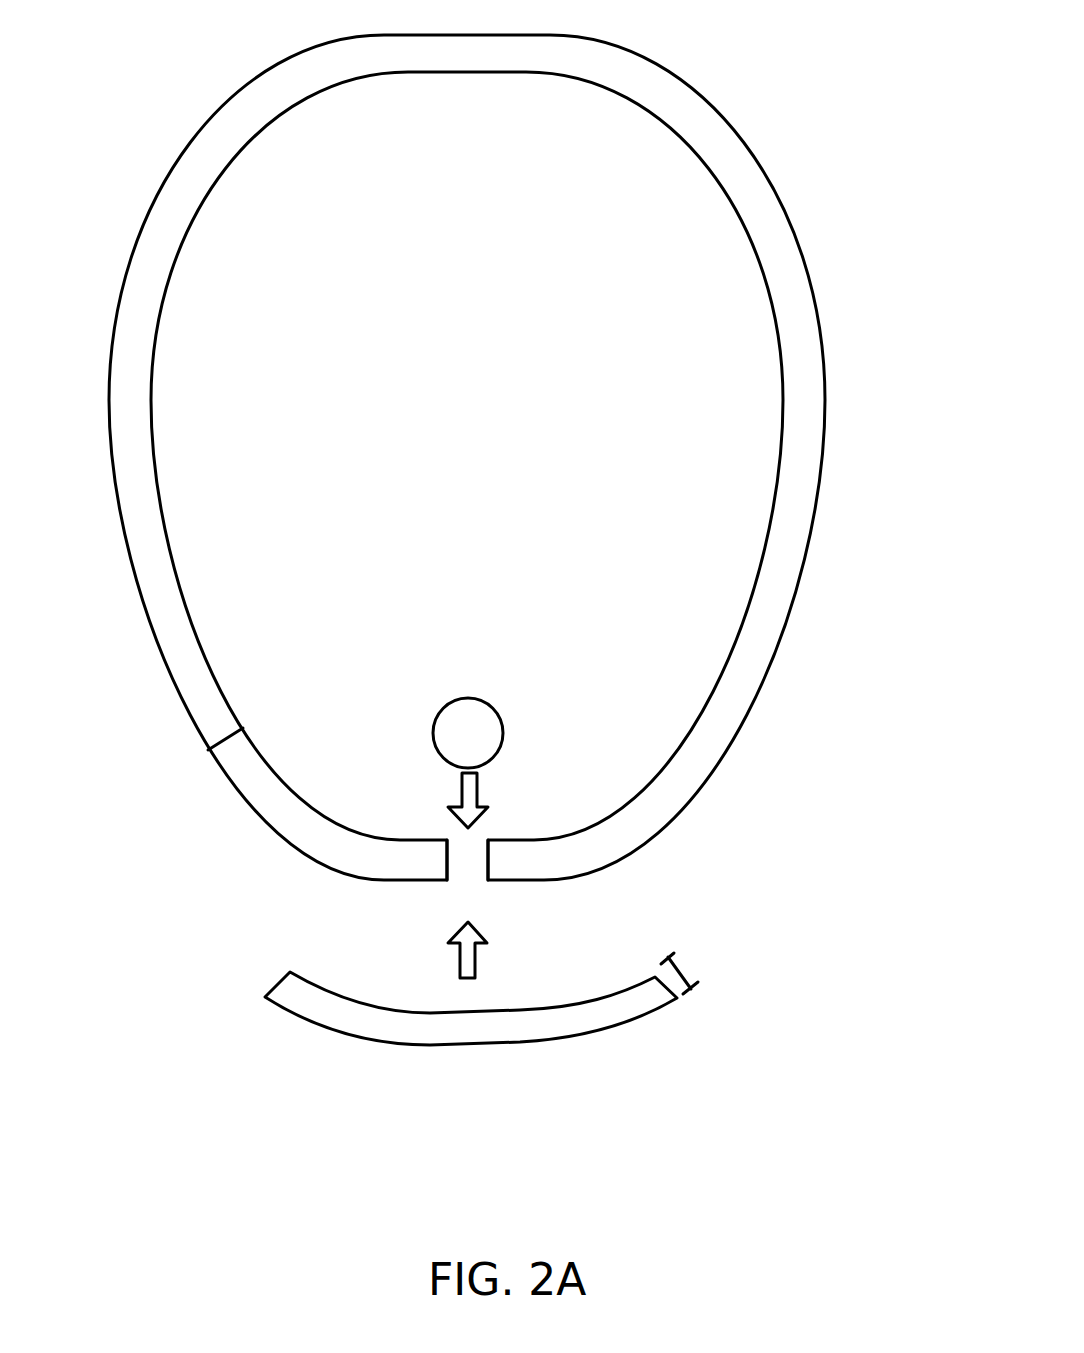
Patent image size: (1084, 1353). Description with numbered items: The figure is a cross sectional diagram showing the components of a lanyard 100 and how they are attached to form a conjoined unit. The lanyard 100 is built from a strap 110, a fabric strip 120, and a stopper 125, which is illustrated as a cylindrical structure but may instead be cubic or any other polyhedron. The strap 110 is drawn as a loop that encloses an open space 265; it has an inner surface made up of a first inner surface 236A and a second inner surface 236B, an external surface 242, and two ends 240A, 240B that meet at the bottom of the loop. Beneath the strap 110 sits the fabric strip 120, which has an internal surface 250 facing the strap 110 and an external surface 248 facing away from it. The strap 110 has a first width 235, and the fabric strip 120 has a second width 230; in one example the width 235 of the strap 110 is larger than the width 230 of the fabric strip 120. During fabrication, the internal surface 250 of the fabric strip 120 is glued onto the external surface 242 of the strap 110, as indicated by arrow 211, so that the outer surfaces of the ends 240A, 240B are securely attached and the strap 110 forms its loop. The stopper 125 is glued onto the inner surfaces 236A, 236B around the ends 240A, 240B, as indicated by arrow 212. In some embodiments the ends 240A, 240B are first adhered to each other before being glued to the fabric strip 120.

The lanyard 100 is at (502, 594).
The strap 110 is at (788, 518).
The fabric strip 120 is at (340, 1008).
The stopper 125 is at (468, 733).
The arrow 211 is at (458, 962).
The arrow 212 is at (473, 787).
The second width 230 is at (683, 967).
The first width 235 is at (230, 753).
The first inner surface 236A is at (158, 490).
The second inner surface 236B is at (782, 450).
The end 240A is at (437, 860).
The end 240B is at (490, 855).
The external surface 242 is at (723, 760).
The external surface 248 is at (575, 1037).
The internal surface 250 is at (565, 1007).
The open space 265 is at (678, 262).